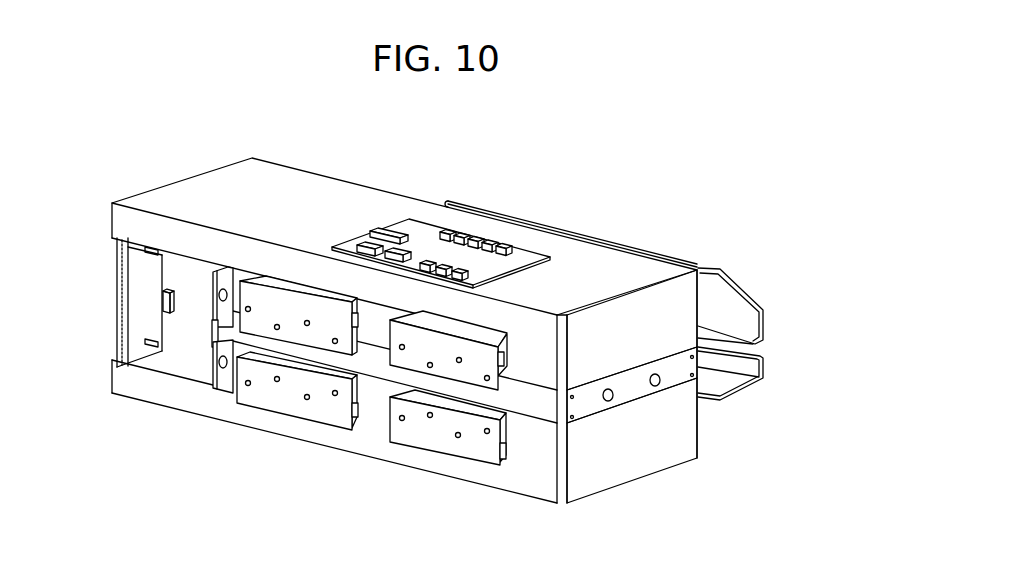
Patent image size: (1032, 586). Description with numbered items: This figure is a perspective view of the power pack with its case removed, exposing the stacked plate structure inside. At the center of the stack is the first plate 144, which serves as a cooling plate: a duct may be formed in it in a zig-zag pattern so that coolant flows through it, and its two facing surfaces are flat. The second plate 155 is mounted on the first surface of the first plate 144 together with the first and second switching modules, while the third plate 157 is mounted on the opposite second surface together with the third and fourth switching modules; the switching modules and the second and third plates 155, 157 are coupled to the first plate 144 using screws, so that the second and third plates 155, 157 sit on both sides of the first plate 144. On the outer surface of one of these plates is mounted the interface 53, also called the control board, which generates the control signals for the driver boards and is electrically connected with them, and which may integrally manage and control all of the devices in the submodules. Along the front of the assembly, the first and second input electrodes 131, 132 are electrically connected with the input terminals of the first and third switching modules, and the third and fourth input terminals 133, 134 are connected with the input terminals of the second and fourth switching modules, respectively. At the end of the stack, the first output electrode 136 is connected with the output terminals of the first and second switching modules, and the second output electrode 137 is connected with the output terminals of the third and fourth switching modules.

The interface 53 is at (425, 233).
The first input electrode 131 is at (443, 338).
The second input electrode 132 is at (297, 305).
The third input terminal 133 is at (440, 436).
The fourth input terminal 134 is at (275, 394).
The first output electrode 136 is at (747, 318).
The second output electrode 137 is at (745, 367).
The first plate 144 is at (675, 385).
The second plate 155 is at (654, 305).
The third plate 157 is at (670, 452).